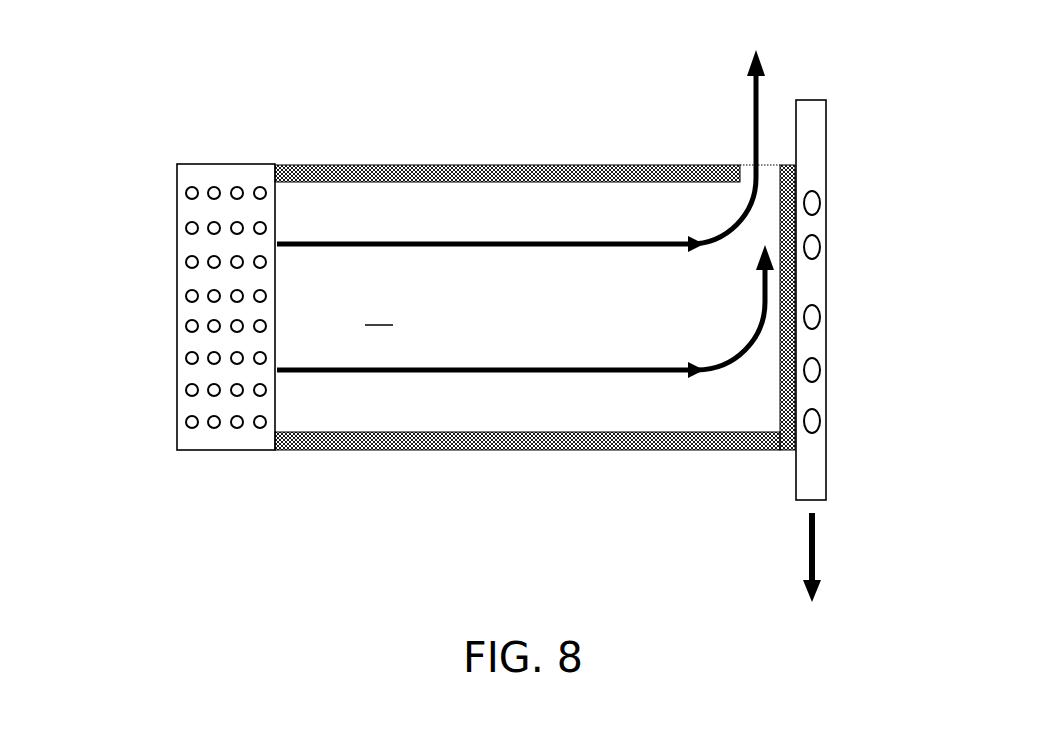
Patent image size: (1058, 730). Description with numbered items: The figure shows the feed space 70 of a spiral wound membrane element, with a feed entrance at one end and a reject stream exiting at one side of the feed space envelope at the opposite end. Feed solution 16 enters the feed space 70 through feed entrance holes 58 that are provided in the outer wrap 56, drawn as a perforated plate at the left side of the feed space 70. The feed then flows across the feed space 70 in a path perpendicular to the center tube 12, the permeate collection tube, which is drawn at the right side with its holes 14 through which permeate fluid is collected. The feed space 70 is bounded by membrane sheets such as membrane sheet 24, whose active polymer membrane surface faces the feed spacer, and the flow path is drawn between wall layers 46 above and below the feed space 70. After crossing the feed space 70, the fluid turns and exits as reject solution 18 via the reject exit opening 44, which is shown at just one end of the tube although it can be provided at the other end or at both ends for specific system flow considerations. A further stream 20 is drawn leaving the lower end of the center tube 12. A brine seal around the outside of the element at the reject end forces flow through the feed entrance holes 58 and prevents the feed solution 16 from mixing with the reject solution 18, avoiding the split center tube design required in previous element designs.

The permeate collection tube 12 is at (815, 224).
The holes 14 is at (812, 422).
The feed solution 16 is at (303, 372).
The reject solution 18 is at (758, 70).
The drain flow 20 is at (812, 557).
The membrane sheet 24 is at (503, 300).
The reject exit opening 44 is at (747, 158).
The insulation 46 is at (462, 172).
The outer wrap 56 is at (190, 178).
The feed entrance holes 58 is at (192, 296).
The feed space 70 is at (379, 312).